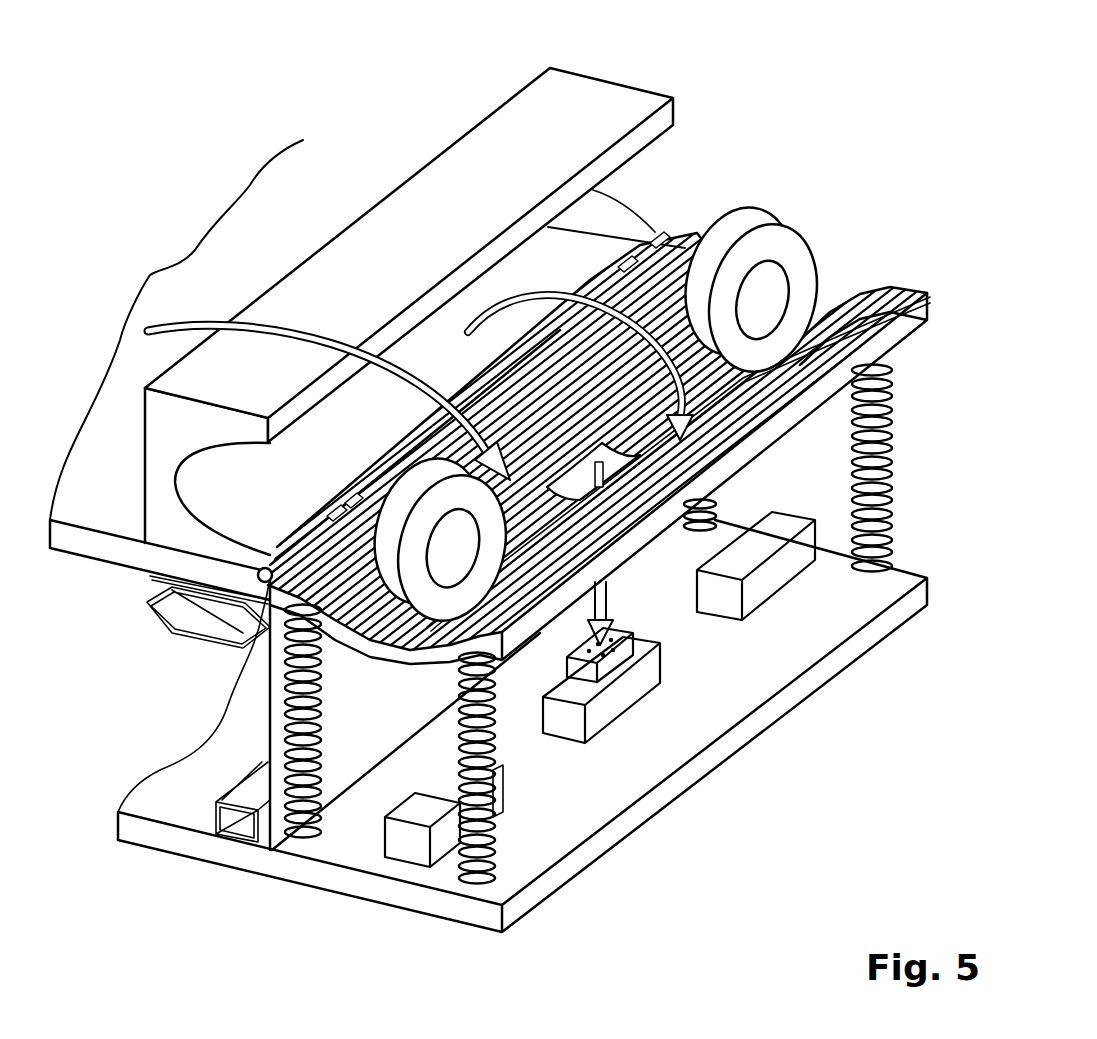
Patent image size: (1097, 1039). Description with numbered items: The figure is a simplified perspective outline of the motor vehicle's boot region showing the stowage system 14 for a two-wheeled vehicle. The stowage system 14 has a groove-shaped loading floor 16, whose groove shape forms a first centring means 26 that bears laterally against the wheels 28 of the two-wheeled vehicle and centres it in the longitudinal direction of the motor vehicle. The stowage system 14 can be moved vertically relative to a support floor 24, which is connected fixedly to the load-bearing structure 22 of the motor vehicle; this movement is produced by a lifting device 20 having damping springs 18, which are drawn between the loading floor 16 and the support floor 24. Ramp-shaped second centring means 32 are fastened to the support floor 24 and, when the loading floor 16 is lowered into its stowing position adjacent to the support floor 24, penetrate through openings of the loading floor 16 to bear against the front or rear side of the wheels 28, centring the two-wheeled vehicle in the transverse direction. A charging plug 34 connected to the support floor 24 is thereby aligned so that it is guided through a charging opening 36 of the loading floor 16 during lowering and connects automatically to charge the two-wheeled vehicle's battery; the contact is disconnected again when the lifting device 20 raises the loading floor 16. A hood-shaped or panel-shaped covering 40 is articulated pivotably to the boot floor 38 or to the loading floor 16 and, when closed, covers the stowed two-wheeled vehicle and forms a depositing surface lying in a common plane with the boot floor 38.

The stowage system 14 is at (878, 264).
The loading floor 16 is at (332, 558).
The damping springs 18 is at (287, 718).
The lifting device 20 is at (176, 681).
The load-bearing structure 22 is at (170, 612).
The support floor 24 is at (780, 665).
The first centring means 26 is at (660, 312).
The wheels 28 is at (412, 492).
The second centring means 32 is at (443, 802).
The charging plug 34 is at (615, 657).
The charging opening 36 is at (583, 467).
The boot floor 38 is at (346, 165).
The covering 40 is at (598, 92).